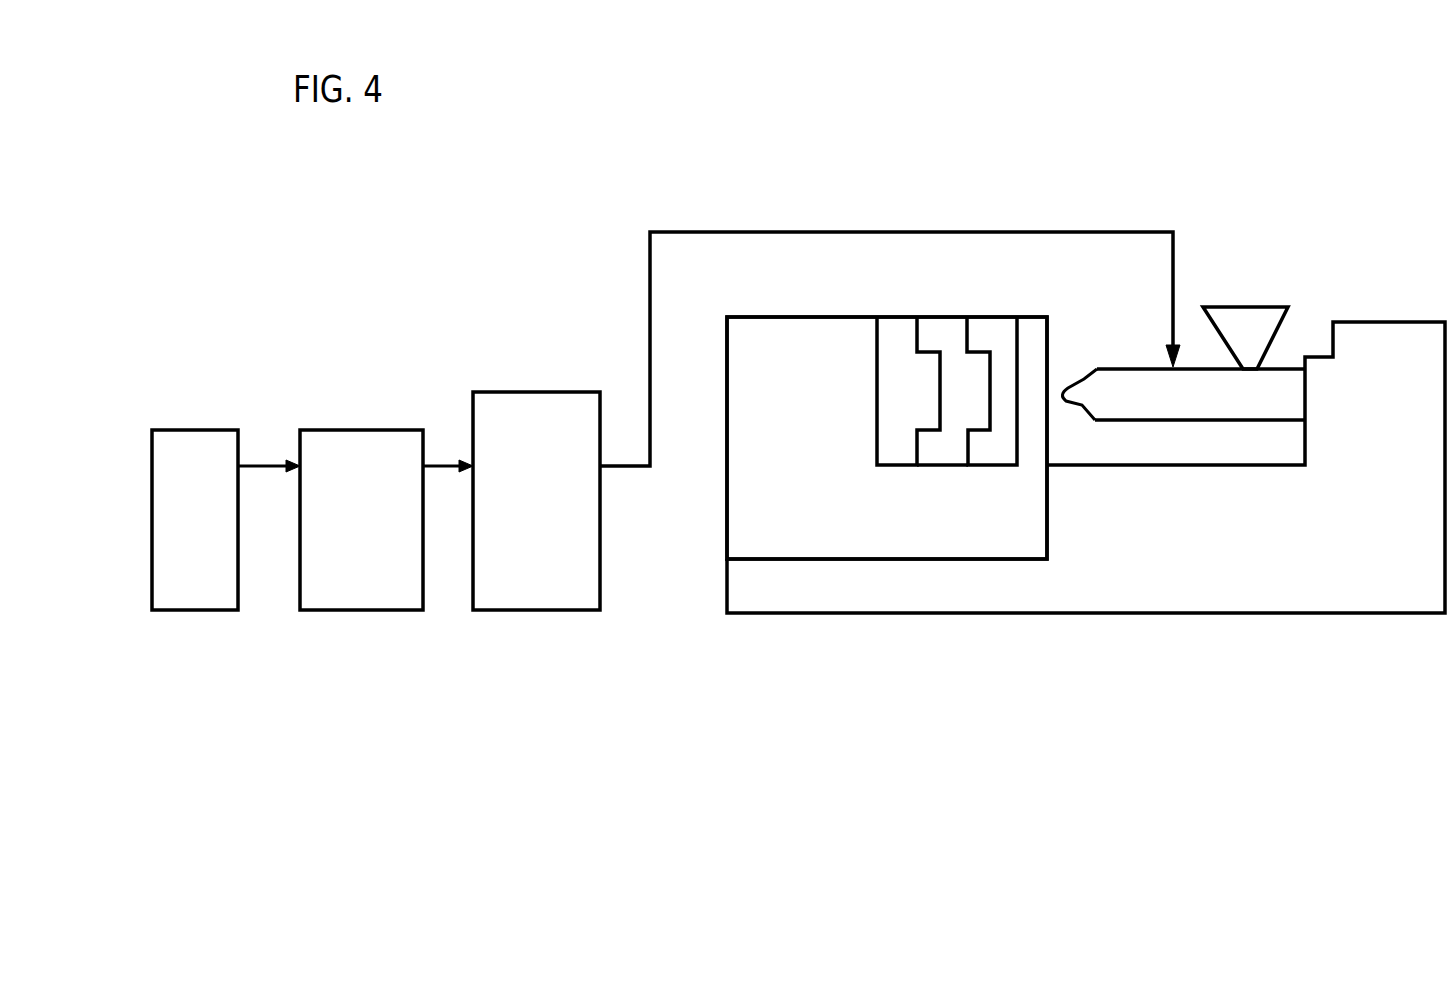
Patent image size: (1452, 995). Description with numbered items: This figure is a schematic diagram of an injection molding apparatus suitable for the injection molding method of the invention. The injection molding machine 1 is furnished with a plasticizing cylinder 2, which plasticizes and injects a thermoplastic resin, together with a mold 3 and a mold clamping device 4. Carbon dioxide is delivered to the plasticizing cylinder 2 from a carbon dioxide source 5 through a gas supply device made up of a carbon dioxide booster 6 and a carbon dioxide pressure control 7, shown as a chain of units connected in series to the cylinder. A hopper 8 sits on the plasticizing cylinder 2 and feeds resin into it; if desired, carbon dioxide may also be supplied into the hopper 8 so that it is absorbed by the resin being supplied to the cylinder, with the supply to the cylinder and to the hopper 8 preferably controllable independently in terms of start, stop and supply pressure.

The injection molding machine 1 is at (1249, 625).
The plasticizing cylinder 2 is at (1195, 390).
The mold 3 is at (985, 332).
The mold clamping device 4 is at (963, 535).
The carbon dioxide source 5 is at (200, 590).
The carbon dioxide booster 6 is at (362, 590).
The carbon dioxide pressure control 7 is at (550, 585).
The hopper 8 is at (1273, 318).